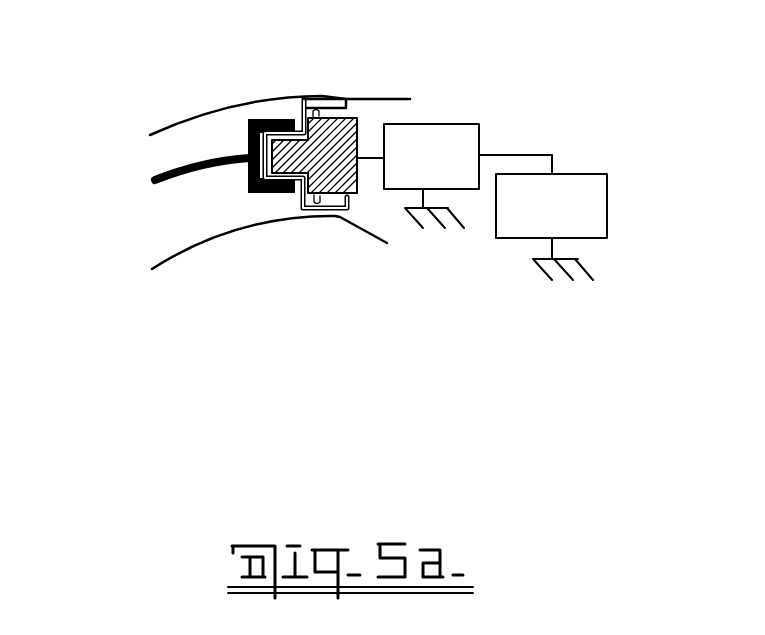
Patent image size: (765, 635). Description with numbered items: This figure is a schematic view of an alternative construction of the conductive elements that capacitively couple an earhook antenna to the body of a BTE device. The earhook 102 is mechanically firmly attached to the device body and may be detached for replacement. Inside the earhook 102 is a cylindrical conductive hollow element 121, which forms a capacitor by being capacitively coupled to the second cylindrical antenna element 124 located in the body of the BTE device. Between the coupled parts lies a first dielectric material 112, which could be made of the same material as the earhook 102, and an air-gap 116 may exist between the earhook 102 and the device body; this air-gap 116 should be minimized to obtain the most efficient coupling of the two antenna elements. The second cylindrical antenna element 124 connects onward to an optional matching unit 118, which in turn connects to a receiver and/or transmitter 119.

The earhook 102 is at (167, 126).
The first dielectric material 112 is at (243, 135).
The air-gap 116 is at (317, 98).
The matching unit 118 is at (418, 176).
The receiver and/or transmitter 119 is at (543, 217).
The cylindrical conductive hollow element 121 is at (267, 193).
The second cylindrical antenna element 124 is at (332, 200).